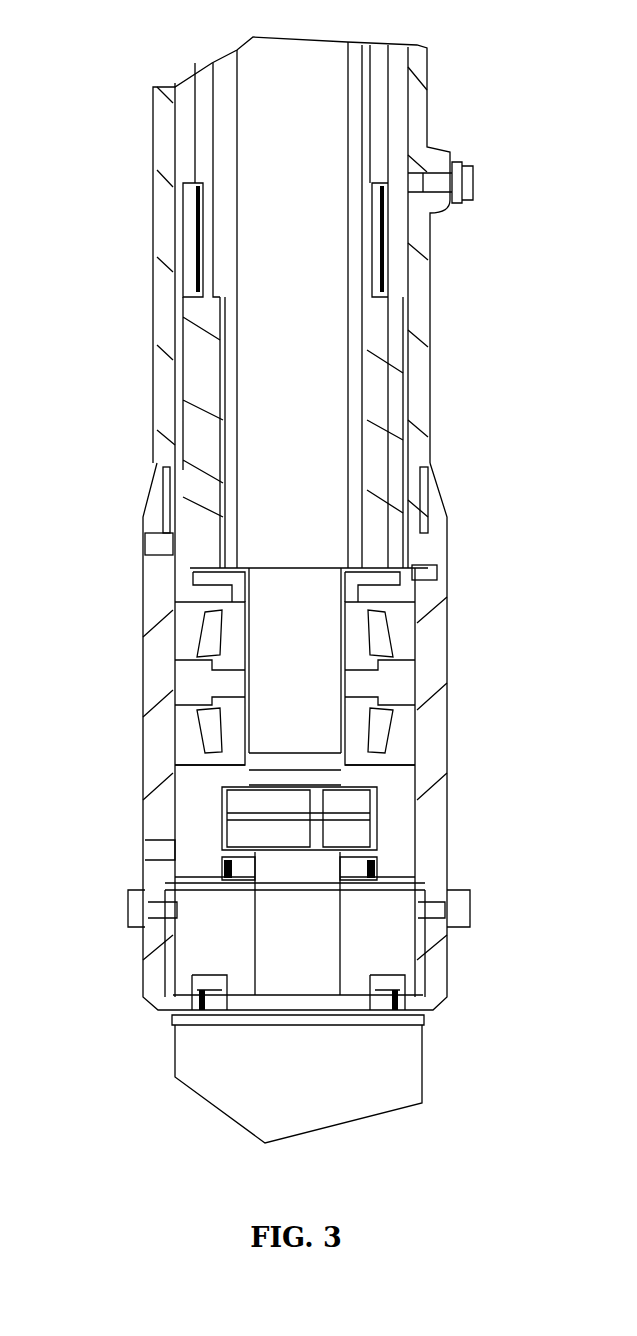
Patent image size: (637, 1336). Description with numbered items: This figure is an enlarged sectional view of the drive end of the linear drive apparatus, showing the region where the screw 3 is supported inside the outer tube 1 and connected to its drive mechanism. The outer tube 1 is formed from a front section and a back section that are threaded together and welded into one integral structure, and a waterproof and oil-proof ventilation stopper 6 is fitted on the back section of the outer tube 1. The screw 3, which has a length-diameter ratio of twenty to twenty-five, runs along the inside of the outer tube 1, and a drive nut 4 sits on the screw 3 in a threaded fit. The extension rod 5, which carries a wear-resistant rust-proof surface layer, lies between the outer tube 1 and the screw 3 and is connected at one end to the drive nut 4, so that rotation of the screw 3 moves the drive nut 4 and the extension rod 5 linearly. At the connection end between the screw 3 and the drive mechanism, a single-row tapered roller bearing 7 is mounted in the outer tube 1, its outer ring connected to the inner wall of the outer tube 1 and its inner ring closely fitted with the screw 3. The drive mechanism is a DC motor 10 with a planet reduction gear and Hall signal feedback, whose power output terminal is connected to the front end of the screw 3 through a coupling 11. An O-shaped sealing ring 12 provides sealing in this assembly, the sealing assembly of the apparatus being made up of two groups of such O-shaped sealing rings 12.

The outer tube 1 is at (175, 395).
The screw 3 is at (265, 222).
The drive nut 4 is at (200, 343).
The extension rod 5 is at (207, 118).
The waterproof and oil-proof ventilation stopper 6 is at (473, 183).
The single-row tapered roller bearing 7 is at (195, 735).
The DC motor 10 is at (205, 1058).
The coupling 11 is at (290, 915).
The O-shaped sealing ring 12 is at (377, 862).